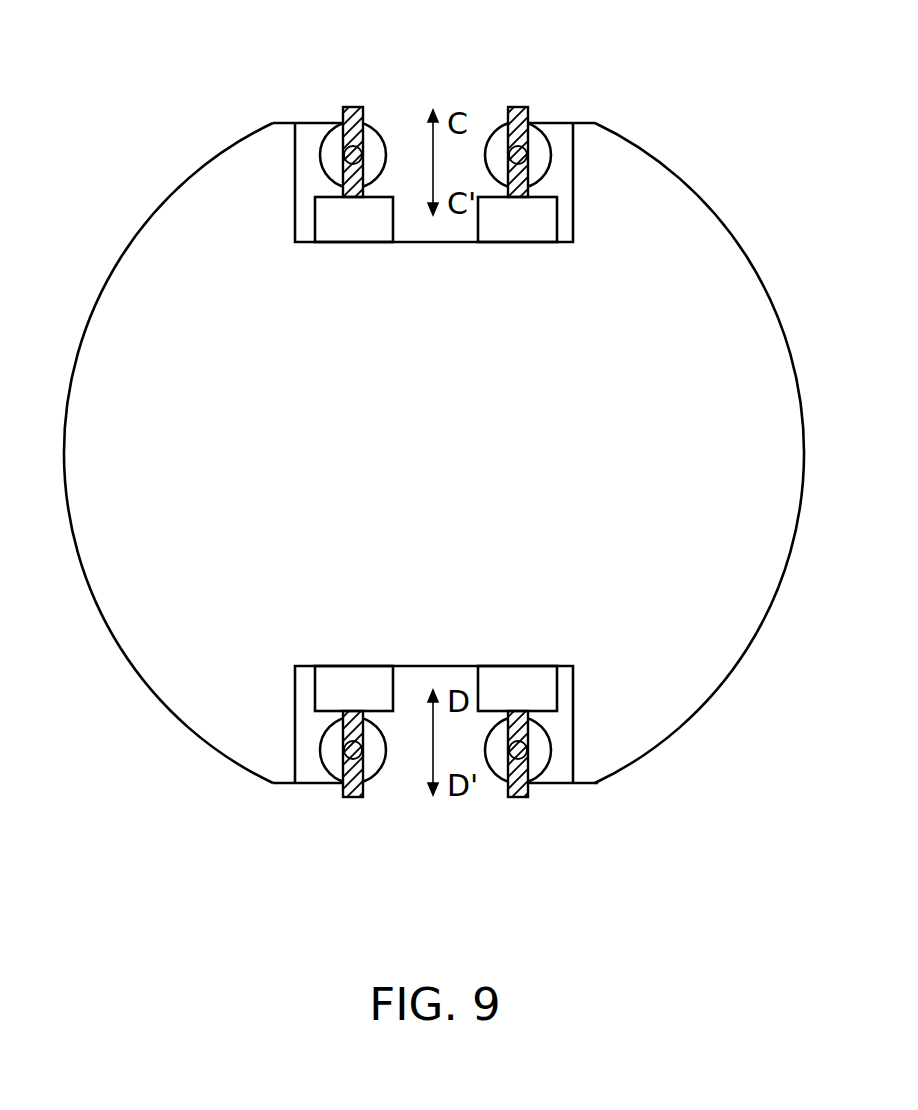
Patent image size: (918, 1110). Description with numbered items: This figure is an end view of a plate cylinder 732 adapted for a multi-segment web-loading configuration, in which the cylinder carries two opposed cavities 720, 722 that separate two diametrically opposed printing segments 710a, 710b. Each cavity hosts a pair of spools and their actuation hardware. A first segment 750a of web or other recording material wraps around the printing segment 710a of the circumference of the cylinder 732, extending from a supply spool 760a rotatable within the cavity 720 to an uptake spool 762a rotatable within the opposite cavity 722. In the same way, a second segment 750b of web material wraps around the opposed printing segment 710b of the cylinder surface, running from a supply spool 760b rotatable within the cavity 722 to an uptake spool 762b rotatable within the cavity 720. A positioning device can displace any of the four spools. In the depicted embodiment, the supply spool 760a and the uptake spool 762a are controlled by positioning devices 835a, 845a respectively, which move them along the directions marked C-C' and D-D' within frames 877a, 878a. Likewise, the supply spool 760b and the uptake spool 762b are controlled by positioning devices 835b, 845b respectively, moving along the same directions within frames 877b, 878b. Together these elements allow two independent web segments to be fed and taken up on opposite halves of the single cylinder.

The printing segment 710a is at (668, 742).
The printing segment 710b is at (87, 322).
The cavity 720 is at (447, 78).
The cavity 722 is at (443, 830).
The plate cylinder 732 is at (650, 413).
The first segment of web material 750a is at (614, 132).
The second segment of web material 750b is at (270, 126).
The supply spool 760a is at (549, 160).
The supply spool 760b is at (321, 749).
The uptake spool 762a is at (551, 749).
The uptake spool 762b is at (321, 160).
The positioning device 835a is at (517, 219).
The positioning device 835b is at (354, 688).
The positioning device 845a is at (517, 688).
The positioning device 845b is at (354, 219).
The frame 877a is at (517, 107).
The frame 877b is at (353, 797).
The frame 878a is at (518, 797).
The frame 878b is at (352, 107).